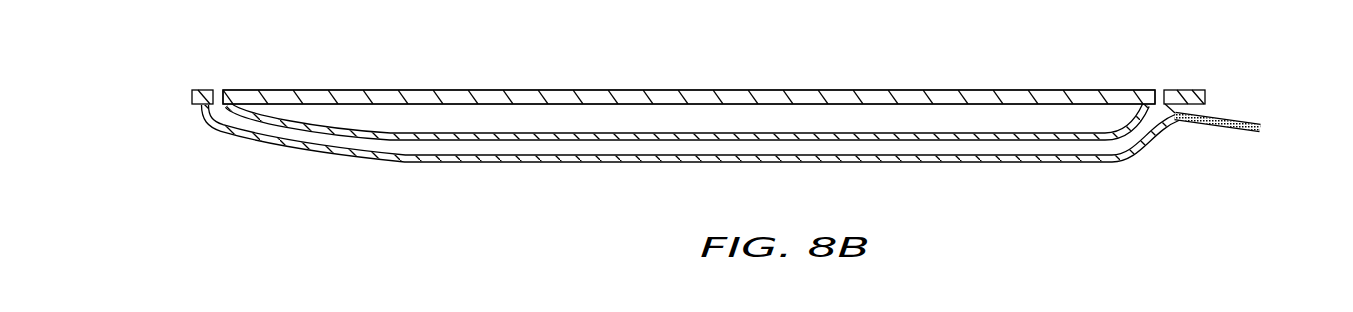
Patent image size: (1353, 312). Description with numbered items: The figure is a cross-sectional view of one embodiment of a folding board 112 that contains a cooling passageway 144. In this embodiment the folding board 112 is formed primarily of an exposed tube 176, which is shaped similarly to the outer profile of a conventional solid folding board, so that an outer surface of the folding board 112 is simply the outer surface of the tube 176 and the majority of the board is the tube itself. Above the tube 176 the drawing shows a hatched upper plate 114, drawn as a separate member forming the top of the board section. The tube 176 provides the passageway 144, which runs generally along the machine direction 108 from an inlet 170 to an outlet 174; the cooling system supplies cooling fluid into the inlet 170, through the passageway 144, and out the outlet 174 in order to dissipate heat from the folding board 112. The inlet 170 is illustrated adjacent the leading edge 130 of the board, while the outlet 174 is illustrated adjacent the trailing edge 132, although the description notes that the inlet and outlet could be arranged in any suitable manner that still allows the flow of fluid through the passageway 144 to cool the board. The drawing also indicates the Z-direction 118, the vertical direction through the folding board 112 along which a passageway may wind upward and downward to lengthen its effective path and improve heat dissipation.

The machine direction 108 is at (110, 225).
The folding board 112 is at (403, 163).
The upper plate 114 is at (648, 88).
The Z-direction 118 is at (110, 225).
The leading edge 130 is at (237, 133).
The trailing edge 132 is at (1248, 113).
The passageway 144 is at (346, 142).
The inlet 170 is at (217, 90).
The outlet 174 is at (1157, 90).
The exposed tube 176 is at (623, 163).